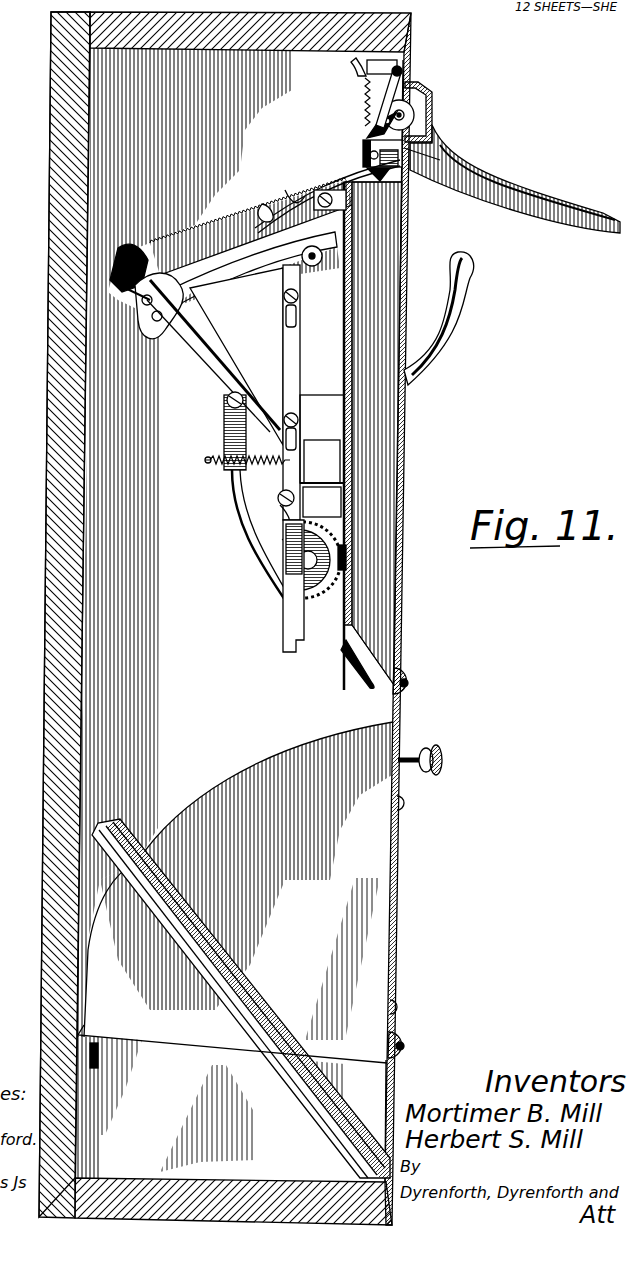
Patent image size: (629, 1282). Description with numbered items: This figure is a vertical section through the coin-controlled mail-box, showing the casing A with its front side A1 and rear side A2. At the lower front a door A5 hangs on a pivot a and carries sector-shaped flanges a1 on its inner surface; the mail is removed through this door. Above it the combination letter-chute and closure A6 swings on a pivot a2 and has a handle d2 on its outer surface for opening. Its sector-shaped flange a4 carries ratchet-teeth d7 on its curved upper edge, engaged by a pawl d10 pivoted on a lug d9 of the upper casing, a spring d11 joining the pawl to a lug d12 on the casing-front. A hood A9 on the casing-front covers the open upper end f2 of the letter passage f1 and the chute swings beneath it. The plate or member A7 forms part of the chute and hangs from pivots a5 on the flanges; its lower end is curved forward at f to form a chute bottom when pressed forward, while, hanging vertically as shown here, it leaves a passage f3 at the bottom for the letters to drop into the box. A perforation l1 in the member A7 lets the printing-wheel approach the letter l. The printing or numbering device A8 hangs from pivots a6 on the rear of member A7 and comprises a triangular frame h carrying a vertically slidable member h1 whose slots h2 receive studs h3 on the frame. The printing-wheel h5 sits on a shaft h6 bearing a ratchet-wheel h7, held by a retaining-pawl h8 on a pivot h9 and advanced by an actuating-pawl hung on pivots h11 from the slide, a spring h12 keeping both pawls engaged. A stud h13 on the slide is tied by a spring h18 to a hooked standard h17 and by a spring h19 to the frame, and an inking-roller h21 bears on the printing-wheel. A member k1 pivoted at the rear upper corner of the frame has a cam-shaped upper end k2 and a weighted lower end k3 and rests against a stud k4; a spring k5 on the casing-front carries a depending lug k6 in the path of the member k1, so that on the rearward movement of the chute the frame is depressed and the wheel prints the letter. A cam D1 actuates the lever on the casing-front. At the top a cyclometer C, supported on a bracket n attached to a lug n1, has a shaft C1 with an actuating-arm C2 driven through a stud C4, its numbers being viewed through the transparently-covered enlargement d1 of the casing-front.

The casing A is at (205, 618).
The front side A1 is at (388, 1115).
The rear side A2 is at (55, 530).
The door A5 is at (400, 895).
The combination letter-chute and closure A6 is at (406, 418).
The plate or member A7 is at (338, 420).
The printing or numbering device A8 is at (213, 356).
The hood A9 is at (503, 200).
The pivot a is at (412, 1043).
The sector-shaped flanges a1 is at (234, 613).
The pivot a2 is at (414, 680).
The sector-shaped flange a4 is at (236, 356).
The pivots a5 is at (318, 206).
The pivots a6 is at (303, 258).
The cyclometer C is at (428, 93).
The shaft of the cyclometer C1 is at (412, 115).
The actuating-arm C2 is at (370, 128).
The stud C4 is at (411, 72).
The enlargement d1 is at (440, 160).
The handle d2 is at (452, 306).
The ratchet-teeth d7 is at (235, 238).
The lug d9 is at (336, 160).
The pawl d10 is at (392, 172).
The spring d11 is at (372, 100).
The lug d12 is at (355, 75).
The cam D1 is at (98, 1055).
The forward-curved lower end f is at (345, 660).
The passage f1 is at (377, 433).
The open upper end f2 is at (377, 221).
The passage f3 is at (372, 690).
The triangular frame member h is at (252, 270).
The vertically-slidable member h1 is at (292, 368).
The slots h2 is at (297, 316).
The studs h3 is at (296, 296).
The printing-wheel h5 is at (305, 482).
The shaft h6 is at (300, 568).
The ratchet-wheel h7 is at (344, 560).
The retaining-pawl h8 is at (225, 433).
The pivot h9 is at (226, 403).
The pivots h11 is at (280, 502).
The spring h12 is at (262, 415).
The stud h13 is at (321, 502).
The standard h17 is at (210, 462).
The spring h18 is at (238, 478).
The spring h19 is at (278, 520).
The inking-roller h21 is at (283, 612).
The member k1 is at (125, 292).
The cam-shaped upper end k2 is at (128, 255).
The weighted lower end k3 is at (155, 320).
The stud k4 is at (145, 300).
The spring k5 is at (275, 178).
The depending lug k6 is at (255, 210).
The letter l is at (212, 968).
The perforation l1 is at (349, 530).
The bracket n is at (395, 150).
The lug n1 is at (366, 158).